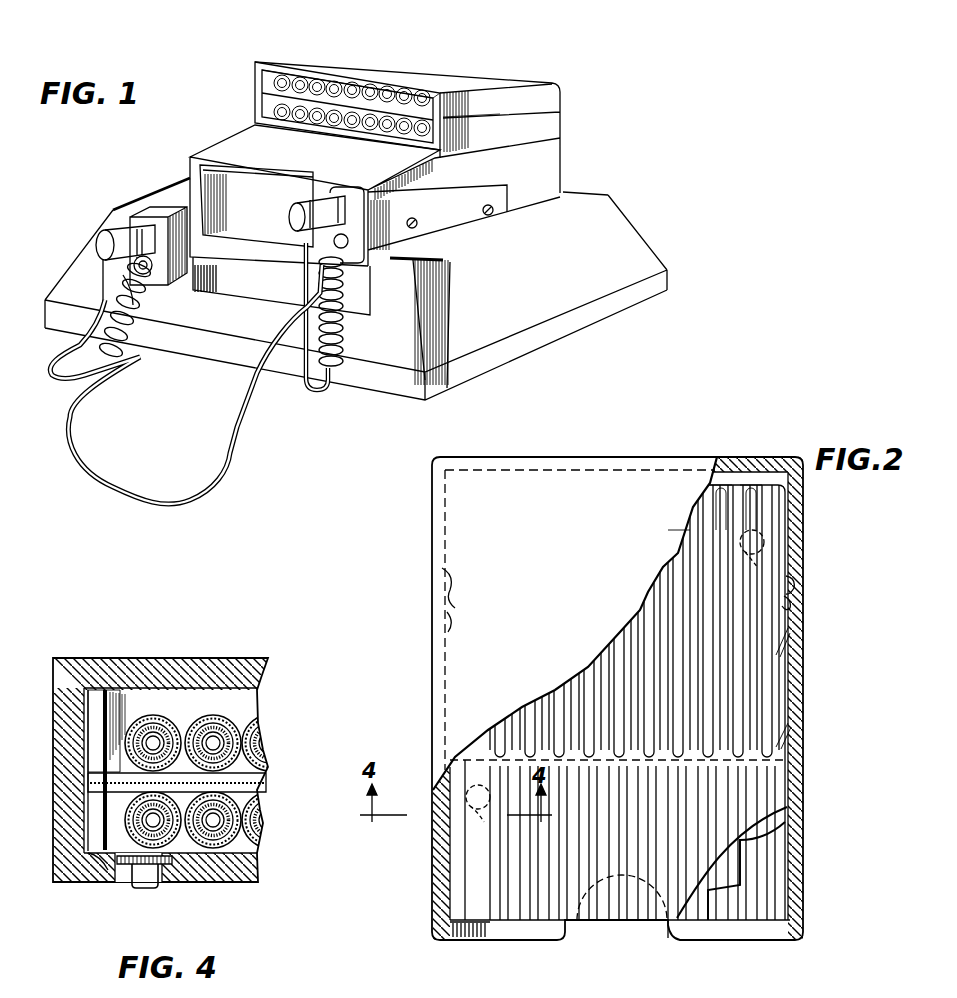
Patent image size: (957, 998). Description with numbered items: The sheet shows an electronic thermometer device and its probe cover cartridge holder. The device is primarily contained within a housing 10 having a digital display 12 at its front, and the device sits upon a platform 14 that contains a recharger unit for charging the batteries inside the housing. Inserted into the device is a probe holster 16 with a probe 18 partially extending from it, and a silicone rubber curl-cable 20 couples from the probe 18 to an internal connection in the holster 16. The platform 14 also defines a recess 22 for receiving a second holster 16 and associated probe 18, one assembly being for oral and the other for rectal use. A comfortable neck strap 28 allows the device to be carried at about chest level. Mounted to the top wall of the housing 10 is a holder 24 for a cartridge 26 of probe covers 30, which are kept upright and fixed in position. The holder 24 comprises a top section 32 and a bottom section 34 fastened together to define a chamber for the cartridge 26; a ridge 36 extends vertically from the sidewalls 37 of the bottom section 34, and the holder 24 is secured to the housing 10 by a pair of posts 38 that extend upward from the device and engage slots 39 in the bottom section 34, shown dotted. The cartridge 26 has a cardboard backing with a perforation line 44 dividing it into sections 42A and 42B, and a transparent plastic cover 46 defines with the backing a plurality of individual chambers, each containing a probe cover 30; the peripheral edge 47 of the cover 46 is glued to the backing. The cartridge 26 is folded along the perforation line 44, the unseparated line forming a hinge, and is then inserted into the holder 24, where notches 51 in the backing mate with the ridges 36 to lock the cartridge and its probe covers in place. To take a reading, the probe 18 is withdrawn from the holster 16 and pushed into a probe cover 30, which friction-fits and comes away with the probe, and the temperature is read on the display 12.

In FIG. 1, the housing 10 is at (553, 163).
In FIG. 1, the digital display 12 is at (258, 188).
In FIG. 1, the platform 14 is at (597, 286).
In FIG. 1, the probe holster 16 is at (178, 217).
In FIG. 1, the probe 18 is at (128, 228).
In FIG. 1, the silicone rubber curl-cable 20 is at (318, 395).
In FIG. 1, the recess 22 is at (160, 300).
In FIG. 1, the holder 24 is at (538, 100).
In FIG. 1, the cartridge 26 is at (309, 94).
In FIG. 2, the cartridge 26 is at (758, 711).
In FIG. 4, the cartridge 26 is at (222, 700).
In FIG. 1, the neck strap 28 is at (230, 487).
In FIG. 1, the probe cover 30 is at (380, 88).
In FIG. 4, the probe cover 30 is at (120, 800).
In FIG. 1, the top section 32 is at (492, 90).
In FIG. 4, the top section 32 is at (70, 658).
In FIG. 1, the bottom section 34 is at (547, 130).
In FIG. 2, the bottom section 34 is at (753, 456).
In FIG. 4, the bottom section 34 is at (62, 846).
In FIG. 2, the ridge 36 is at (438, 570).
In FIG. 4, the ridge 36 is at (118, 688).
In FIG. 2, the sidewalls 37 is at (425, 605).
In FIG. 4, the posts 38 is at (143, 885).
In FIG. 2, the slots 39 is at (770, 540).
In FIG. 4, the slots 39 is at (97, 855).
In FIG. 4, the backing section 42A is at (222, 692).
In FIG. 2, the backing section 42B is at (730, 905).
In FIG. 4, the backing section 42B is at (273, 810).
In FIG. 2, the perforation line 44 is at (755, 925).
In FIG. 4, the transparent plastic cover 46 is at (156, 716).
In FIG. 2, the peripheral edge 47 is at (798, 778).
In FIG. 2, the notches 51 is at (440, 630).